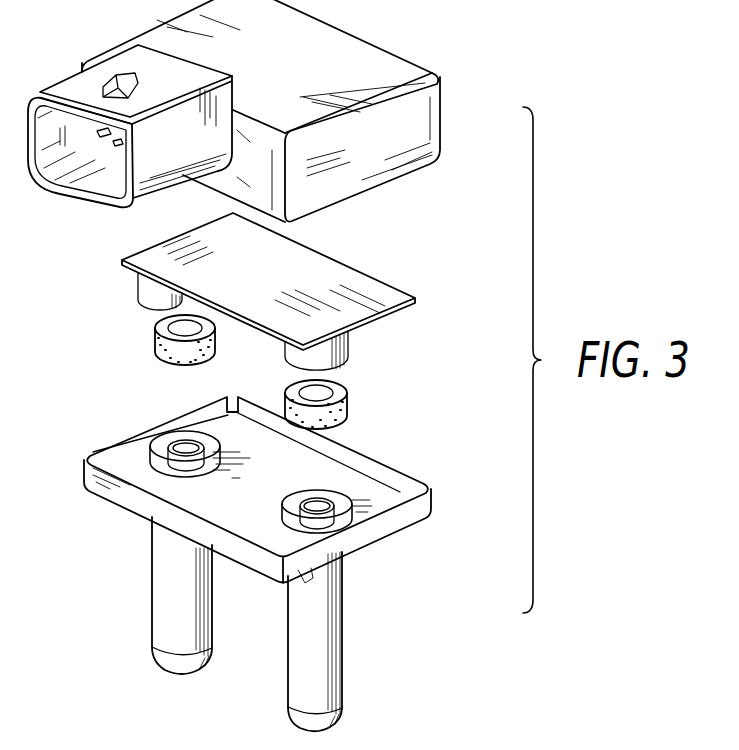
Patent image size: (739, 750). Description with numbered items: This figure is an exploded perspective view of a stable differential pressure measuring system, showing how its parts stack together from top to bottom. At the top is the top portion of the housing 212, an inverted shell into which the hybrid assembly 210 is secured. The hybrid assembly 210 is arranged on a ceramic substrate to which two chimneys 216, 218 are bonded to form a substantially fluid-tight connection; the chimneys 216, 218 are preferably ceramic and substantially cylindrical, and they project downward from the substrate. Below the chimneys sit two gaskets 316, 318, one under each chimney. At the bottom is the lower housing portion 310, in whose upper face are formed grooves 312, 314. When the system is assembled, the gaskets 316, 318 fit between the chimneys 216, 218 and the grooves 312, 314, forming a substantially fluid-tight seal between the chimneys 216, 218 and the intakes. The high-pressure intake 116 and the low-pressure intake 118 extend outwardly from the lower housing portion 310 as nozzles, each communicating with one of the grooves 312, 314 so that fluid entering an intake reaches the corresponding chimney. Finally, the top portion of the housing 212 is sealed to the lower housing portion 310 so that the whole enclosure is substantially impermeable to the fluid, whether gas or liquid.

The top portion of the housing 212 is at (382, 54).
The hybrid assembly 210 is at (420, 280).
The chimney 216 is at (348, 343).
The chimney 218 is at (163, 302).
The gasket 318 is at (155, 338).
The gasket 316 is at (348, 400).
The lower housing portion 310 is at (96, 480).
The groove 314 is at (163, 443).
The groove 312 is at (340, 512).
The low-pressure intake 118 is at (160, 610).
The high-pressure intake 116 is at (342, 683).